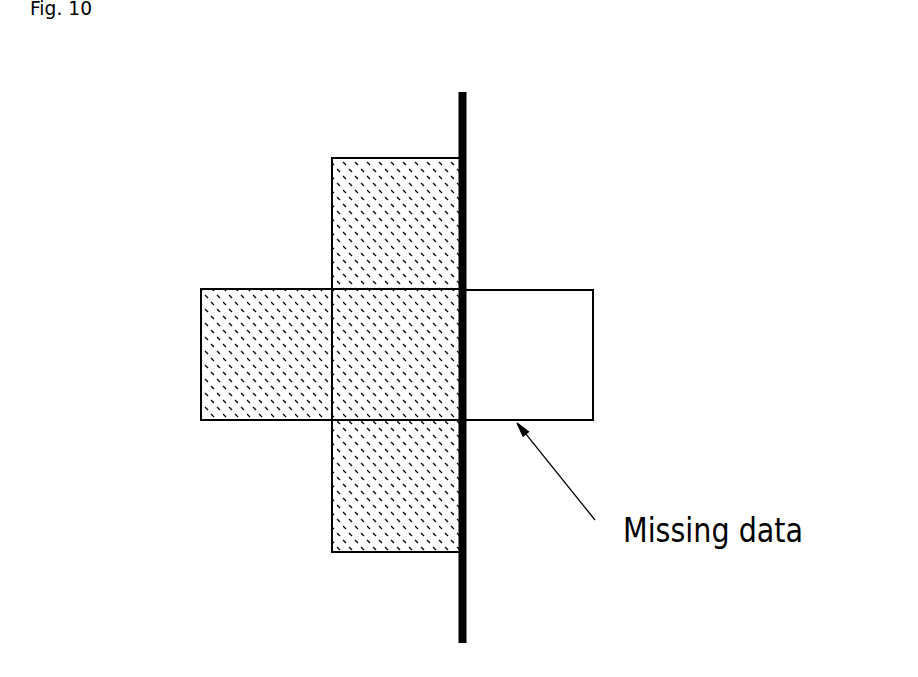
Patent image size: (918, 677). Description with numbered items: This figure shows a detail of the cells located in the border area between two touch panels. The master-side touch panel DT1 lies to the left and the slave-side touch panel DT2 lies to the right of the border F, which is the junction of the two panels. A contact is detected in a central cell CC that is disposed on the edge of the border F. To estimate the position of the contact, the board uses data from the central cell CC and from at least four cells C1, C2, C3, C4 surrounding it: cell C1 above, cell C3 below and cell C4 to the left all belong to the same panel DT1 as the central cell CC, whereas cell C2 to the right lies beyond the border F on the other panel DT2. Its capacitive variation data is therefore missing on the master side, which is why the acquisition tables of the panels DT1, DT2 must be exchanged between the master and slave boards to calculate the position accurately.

The border F is at (467, 104).
The surrounding cell C1 is at (397, 223).
The surrounding cell C2 is at (527, 355).
The surrounding cell C3 is at (397, 486).
The surrounding cell C4 is at (266, 354).
The central cell CC is at (397, 354).
The touch panel DT1 is at (173, 182).
The touch panel DT2 is at (757, 182).